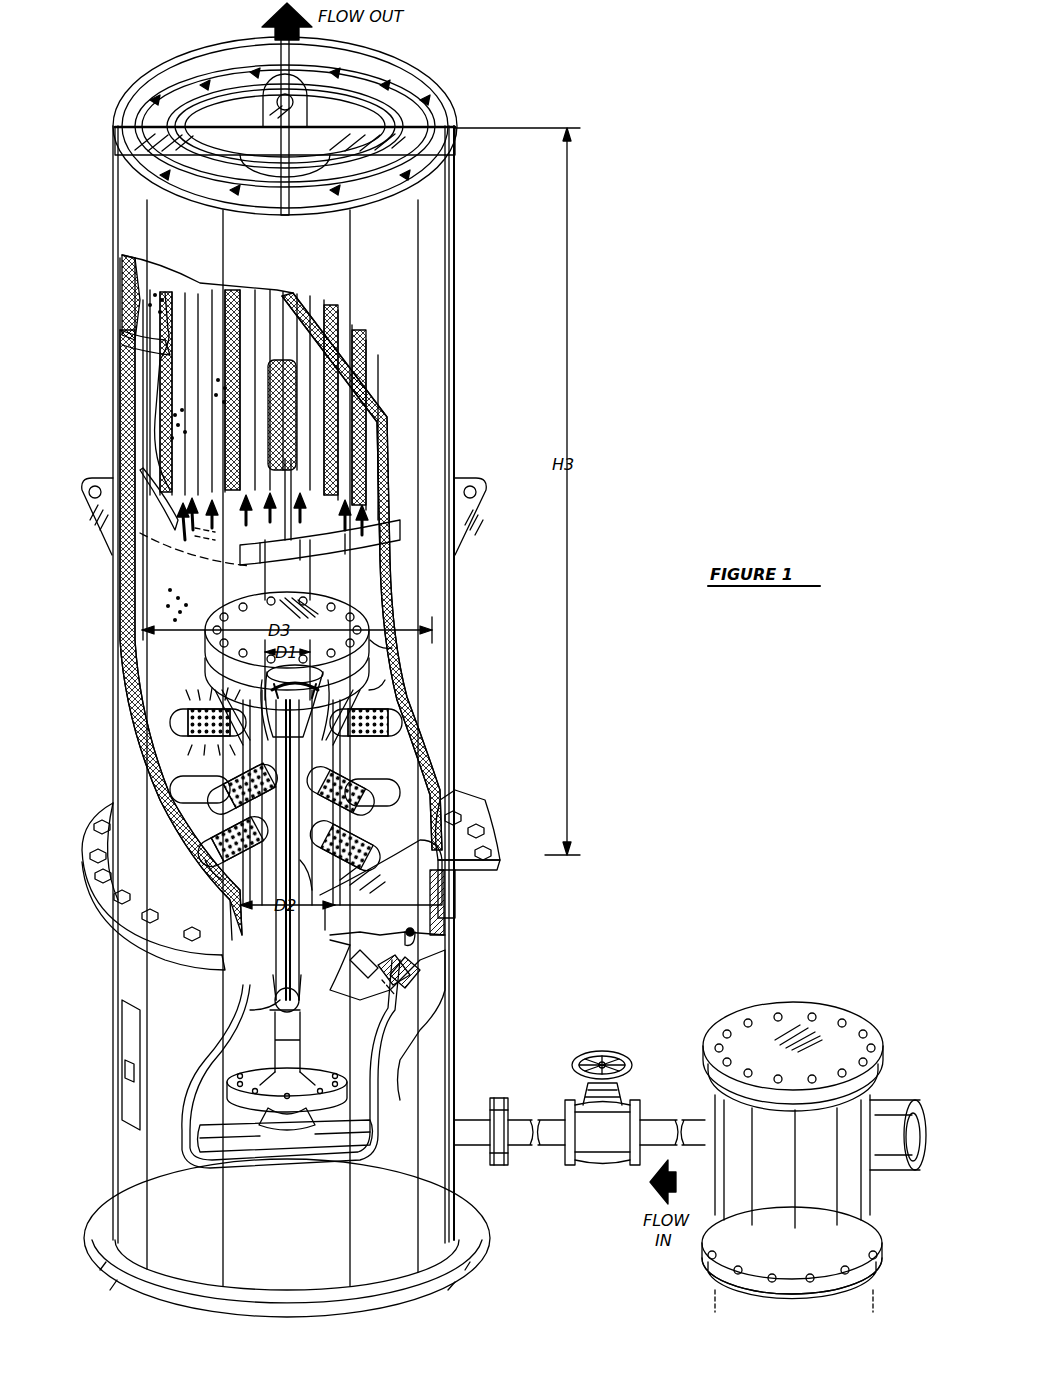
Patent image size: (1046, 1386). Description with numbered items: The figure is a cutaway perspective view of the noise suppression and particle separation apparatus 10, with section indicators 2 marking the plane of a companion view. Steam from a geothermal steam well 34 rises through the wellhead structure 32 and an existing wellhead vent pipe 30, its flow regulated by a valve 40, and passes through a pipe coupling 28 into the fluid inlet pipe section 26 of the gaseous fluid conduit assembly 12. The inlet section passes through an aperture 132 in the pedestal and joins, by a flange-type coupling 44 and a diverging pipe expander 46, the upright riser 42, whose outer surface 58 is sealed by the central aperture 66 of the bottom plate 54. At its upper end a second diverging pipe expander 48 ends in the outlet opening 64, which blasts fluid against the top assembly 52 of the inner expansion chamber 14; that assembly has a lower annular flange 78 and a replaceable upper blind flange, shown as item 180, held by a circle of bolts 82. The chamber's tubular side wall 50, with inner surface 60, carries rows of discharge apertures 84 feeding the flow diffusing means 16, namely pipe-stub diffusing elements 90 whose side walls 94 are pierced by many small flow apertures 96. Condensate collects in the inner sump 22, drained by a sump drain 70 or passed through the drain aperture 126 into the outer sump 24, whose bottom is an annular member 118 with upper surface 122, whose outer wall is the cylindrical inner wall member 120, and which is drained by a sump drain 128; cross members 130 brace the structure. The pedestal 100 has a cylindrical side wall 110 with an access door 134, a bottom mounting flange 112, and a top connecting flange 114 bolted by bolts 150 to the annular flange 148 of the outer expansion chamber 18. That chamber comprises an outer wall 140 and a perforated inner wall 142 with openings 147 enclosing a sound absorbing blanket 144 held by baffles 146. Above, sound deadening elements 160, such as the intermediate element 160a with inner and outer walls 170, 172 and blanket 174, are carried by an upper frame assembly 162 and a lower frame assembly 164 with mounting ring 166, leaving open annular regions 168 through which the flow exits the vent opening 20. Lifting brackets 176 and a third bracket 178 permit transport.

The section line 2 is at (78, 442).
The noise suppression and particle separation apparatus 10 is at (472, 647).
The gaseous fluid conduit assembly 12 is at (460, 1116).
The inner or first fluid expansion chamber 14 is at (240, 760).
The flow diffusing means 16 is at (182, 712).
The outer or second expansion chamber 18 is at (456, 591).
The vent or opening 20 is at (395, 66).
The sump region of first chamber 22 is at (316, 946).
The sump region of second chamber 24 is at (386, 876).
The fluid inlet pipe section 26 is at (470, 1145).
The pipe coupling 28 is at (498, 1095).
The wellhead vent pipe 30 is at (522, 1145).
The wellhead structure 32 is at (824, 1006).
The geothermal steam well 34 is at (792, 1261).
The valve 40 is at (652, 1060).
The discharge section or riser 42 is at (250, 878).
The flange-type coupling 44 is at (322, 1092).
The diverging pipe expander 46 is at (302, 1040).
The diverging pipe expander 48 is at (302, 740).
The tubular side wall 50 is at (380, 870).
The top assembly 52 is at (203, 642).
The bottom plate 54 is at (278, 1030).
The outer surface of the riser 58 is at (304, 946).
The inner surface of chamber wall 60 is at (298, 890).
The outlet opening 64 is at (295, 702).
The central aperture 66 is at (302, 1008).
The sump drain 70 is at (378, 965).
The lower annular flange 78 is at (378, 672).
The bolts 82 is at (325, 595).
The discharge apertures 84 is at (242, 840).
The flow diffusing elements 90 is at (200, 848).
The side wall of diffusing element 94 is at (338, 768).
The flow apertures 96 is at (188, 744).
The base or pedestal 100 is at (454, 1012).
The cylindrical side wall of pedestal 110 is at (378, 1070).
The bottom support or mounting flange 112 is at (472, 1238).
The top connecting flange 114 is at (488, 890).
The annular member 118 is at (412, 950).
The cylindrical inner wall member 120 is at (462, 920).
The upper surface of annular member 122 is at (387, 917).
The drain aperture 126 is at (330, 912).
The sump drain 128 is at (462, 940).
The cross members 130 is at (380, 998).
The aperture 132 is at (458, 1135).
The access door 134 is at (140, 1060).
The outer wall 140 is at (120, 590).
The inner wall 142 is at (135, 572).
The sound absorbing blanket 144 is at (135, 552).
The baffles 146 is at (126, 318).
The inner wall openings 147 is at (182, 390).
The annular flange 148 is at (492, 860).
The bolts 150 is at (105, 860).
The sound absorbing or deadening elements 160 is at (274, 184).
The intermediate sound deadening element 160a is at (259, 428).
The upper frame assembly 162 is at (142, 112).
The lower frame assembly 164 is at (376, 538).
The mounting ring 166 is at (265, 570).
The open annular regions 168 is at (233, 115).
The annular inner wall 170 is at (330, 190).
The annular outer wall 172 is at (300, 205).
The sound deadening blanket 174 is at (268, 200).
The apparatus lifting brackets 176 is at (98, 478).
The lifting bracket 178 is at (290, 72).
The gasket 180 is at (396, 634).